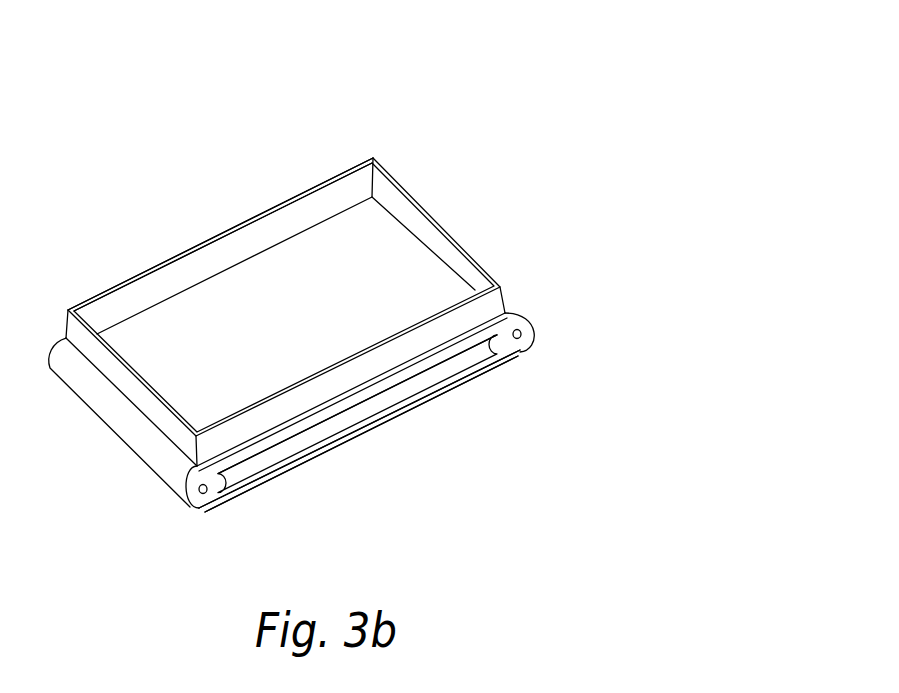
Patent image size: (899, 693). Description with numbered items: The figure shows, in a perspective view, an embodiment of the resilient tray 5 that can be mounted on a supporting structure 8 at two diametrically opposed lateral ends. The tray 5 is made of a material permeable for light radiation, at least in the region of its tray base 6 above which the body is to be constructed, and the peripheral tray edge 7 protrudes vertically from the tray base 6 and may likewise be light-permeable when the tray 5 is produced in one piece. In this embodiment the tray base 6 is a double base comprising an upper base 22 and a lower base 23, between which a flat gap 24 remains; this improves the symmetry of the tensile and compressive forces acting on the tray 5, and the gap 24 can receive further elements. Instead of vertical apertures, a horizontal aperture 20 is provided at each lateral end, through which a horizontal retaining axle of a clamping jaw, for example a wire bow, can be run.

The tray 5 is at (114, 179).
The tray base 6 is at (294, 325).
The tray edge 7 is at (135, 300).
The supporting structure 8 is at (127, 432).
The horizontal aperture 20 is at (206, 494).
The upper base 22 is at (392, 388).
The lower base 23 is at (328, 448).
The flat gap 24 is at (358, 413).